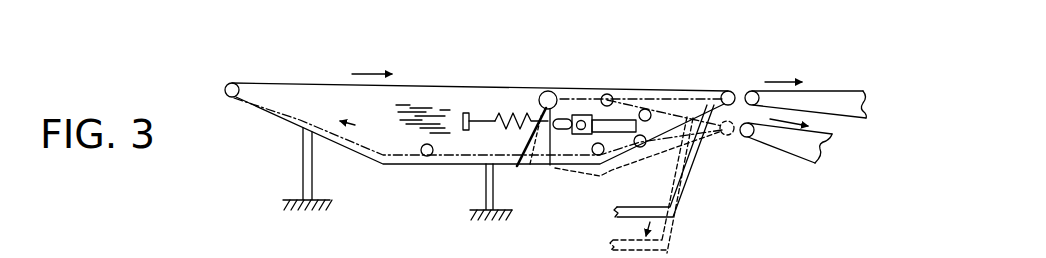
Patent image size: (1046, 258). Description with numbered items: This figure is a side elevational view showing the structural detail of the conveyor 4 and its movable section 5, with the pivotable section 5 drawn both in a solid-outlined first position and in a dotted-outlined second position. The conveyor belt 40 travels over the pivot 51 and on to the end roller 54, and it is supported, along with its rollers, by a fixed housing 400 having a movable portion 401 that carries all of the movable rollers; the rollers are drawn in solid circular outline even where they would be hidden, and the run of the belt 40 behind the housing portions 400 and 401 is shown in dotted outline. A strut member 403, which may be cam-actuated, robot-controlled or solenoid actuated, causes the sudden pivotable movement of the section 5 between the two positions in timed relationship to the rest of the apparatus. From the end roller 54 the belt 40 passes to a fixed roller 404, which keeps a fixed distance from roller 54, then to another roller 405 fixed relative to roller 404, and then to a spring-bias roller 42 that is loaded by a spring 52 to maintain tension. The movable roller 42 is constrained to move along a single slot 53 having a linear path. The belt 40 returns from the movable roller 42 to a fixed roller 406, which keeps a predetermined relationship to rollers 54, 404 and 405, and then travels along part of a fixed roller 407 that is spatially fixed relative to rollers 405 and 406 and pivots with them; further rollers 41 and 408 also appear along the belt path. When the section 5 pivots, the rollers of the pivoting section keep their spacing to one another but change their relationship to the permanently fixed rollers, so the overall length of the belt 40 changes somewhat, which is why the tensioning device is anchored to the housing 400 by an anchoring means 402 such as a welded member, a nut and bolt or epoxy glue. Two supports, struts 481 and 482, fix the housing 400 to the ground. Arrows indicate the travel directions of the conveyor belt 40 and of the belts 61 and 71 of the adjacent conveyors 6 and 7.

The conveyor 4 is at (402, 80).
The conveyor belt 40 is at (295, 83).
The housing 400 is at (368, 115).
The movable portion 401 is at (683, 90).
The anchoring means 402 is at (463, 113).
The strut member 403 is at (688, 190).
The fixed roller 404 is at (608, 94).
The roller 405 is at (645, 109).
The fixed roller 406 is at (623, 160).
The fixed roller 407 is at (598, 156).
The roller 408 is at (425, 157).
The roller 41 is at (231, 82).
The spring-bias roller 42 is at (580, 140).
The strut 481 is at (303, 172).
The strut 482 is at (485, 200).
The movable section 5 is at (565, 62).
The pivot 51 is at (547, 91).
The spring 52 is at (497, 112).
The slot 53 is at (558, 119).
The end roller 54 is at (734, 91).
The discharge conveyor 6 is at (813, 80).
The conveyor belt 61 is at (838, 90).
The reject conveyor 7 is at (795, 162).
The conveyor belt 71 is at (838, 128).